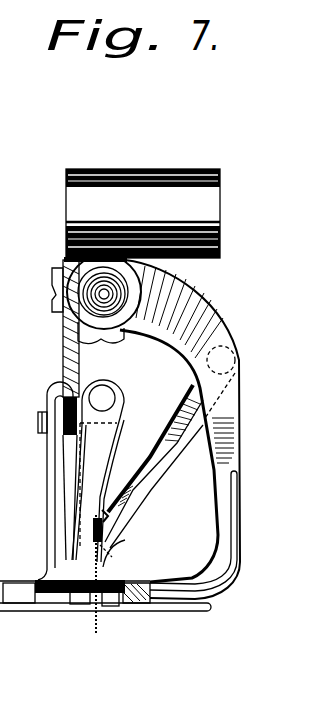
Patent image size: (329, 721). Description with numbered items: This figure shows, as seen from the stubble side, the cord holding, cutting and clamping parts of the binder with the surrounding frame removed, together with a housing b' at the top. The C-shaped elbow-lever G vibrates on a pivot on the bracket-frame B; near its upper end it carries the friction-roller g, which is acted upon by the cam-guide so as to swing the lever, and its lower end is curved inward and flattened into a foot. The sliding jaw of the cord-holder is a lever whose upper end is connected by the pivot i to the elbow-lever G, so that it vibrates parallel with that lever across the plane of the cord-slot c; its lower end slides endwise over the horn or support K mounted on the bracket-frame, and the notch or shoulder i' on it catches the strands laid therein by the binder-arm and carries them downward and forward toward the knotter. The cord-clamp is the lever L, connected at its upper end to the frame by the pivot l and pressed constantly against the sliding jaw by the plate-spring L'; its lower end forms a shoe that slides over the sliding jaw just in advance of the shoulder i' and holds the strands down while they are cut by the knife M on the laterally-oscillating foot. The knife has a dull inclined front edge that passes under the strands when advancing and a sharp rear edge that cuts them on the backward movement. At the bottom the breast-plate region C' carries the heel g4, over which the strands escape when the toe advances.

The housing b' is at (142, 215).
The bracket-frame B is at (59, 410).
The friction-roller g is at (104, 299).
The elbow-lever G is at (180, 429).
The pivot i is at (237, 378).
The pivot l is at (116, 396).
The cord-clamp lever L is at (132, 473).
The horn or support K is at (160, 516).
The notch or shoulder i' is at (100, 517).
The knife M is at (120, 553).
The plate-spring L' is at (44, 481).
The base C' is at (105, 584).
The heel g4 is at (19, 593).
The cord-slot c is at (85, 575).